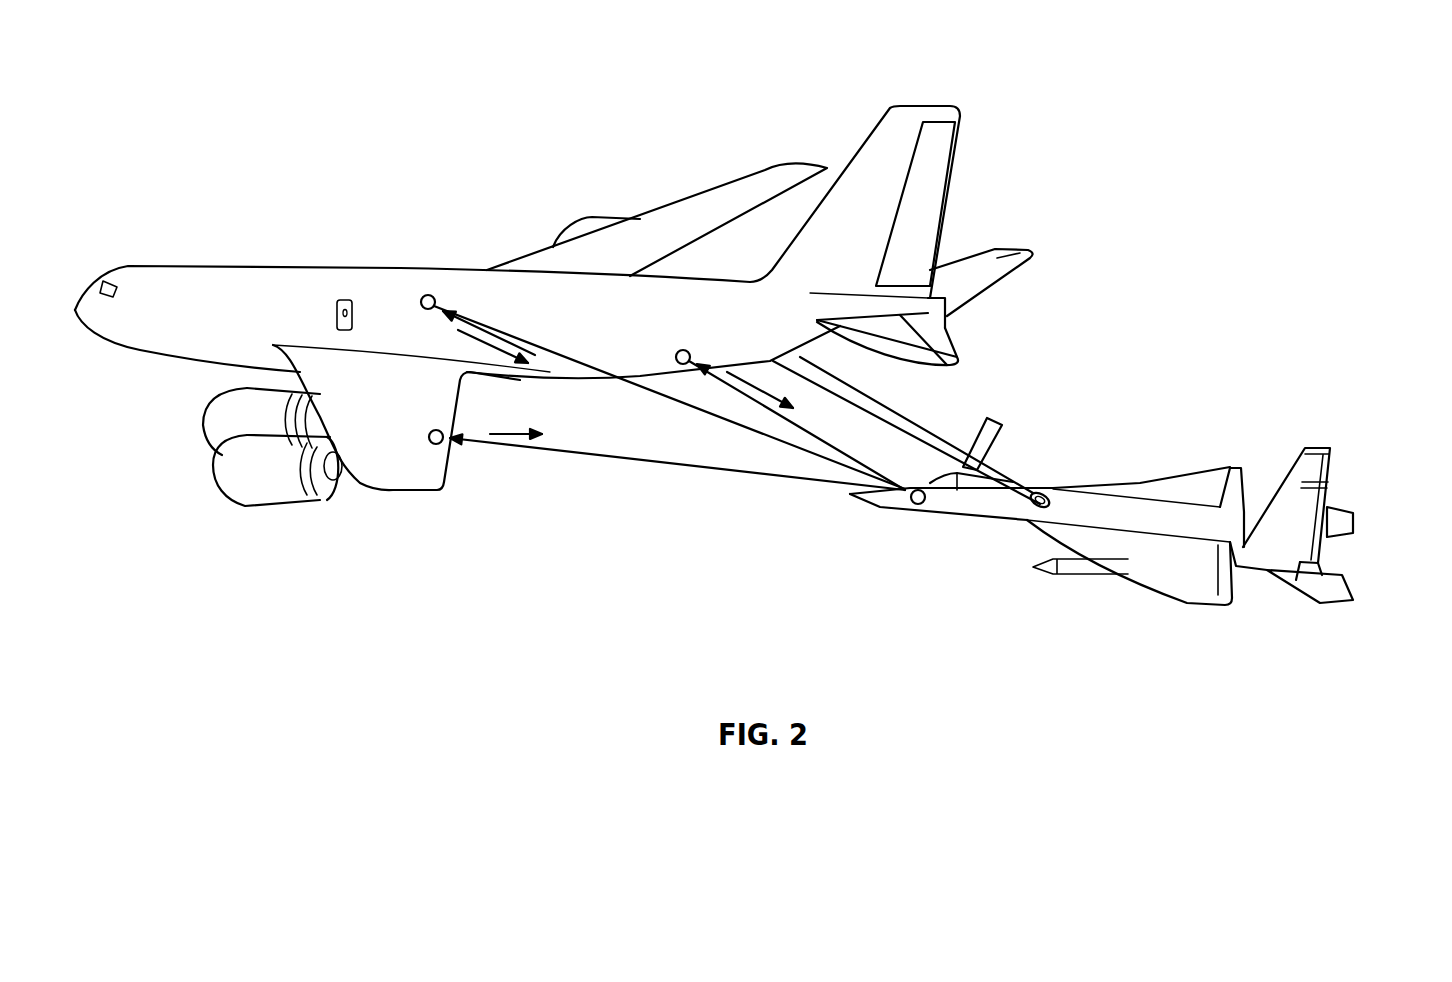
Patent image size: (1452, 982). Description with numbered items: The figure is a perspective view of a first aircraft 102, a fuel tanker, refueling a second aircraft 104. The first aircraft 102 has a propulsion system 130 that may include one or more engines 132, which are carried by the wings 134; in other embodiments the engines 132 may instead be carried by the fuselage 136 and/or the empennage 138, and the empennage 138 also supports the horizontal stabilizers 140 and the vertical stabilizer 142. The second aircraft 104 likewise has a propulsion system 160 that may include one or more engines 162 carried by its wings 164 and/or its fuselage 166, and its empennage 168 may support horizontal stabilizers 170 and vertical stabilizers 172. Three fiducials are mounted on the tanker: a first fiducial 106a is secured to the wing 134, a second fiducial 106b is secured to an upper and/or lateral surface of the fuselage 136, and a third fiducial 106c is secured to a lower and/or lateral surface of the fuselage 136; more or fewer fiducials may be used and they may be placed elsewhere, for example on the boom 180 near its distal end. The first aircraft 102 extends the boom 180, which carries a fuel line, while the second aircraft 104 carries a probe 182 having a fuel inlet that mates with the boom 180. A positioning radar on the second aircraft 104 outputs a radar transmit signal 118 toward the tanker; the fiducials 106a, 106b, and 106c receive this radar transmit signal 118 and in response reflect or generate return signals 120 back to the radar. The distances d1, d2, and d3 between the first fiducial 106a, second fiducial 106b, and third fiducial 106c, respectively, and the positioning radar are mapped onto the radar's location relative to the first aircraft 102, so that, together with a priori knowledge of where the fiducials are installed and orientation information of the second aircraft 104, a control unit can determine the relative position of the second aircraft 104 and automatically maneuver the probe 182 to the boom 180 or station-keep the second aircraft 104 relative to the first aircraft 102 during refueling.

The first aircraft 102 is at (232, 258).
The second aircraft 104 is at (1218, 505).
The first fiducial 106a is at (439, 445).
The second fiducial 106b is at (429, 295).
The third fiducial 106c is at (688, 350).
The radar transmit signal 118 is at (783, 484).
The return signals 120 is at (510, 330).
The propulsion system 130 is at (602, 193).
The engines 132 is at (605, 225).
The wings 134 is at (773, 180).
The fuselage 136 is at (312, 268).
The empennage 138 is at (927, 253).
The horizontal stabilizers 140 is at (1015, 262).
The vertical stabilizer 142 is at (905, 140).
The propulsion system 160 is at (1013, 540).
The engines 162 is at (1005, 520).
The wings 164 is at (1193, 483).
The fuselage 166 is at (1067, 495).
The empennage 168 is at (1318, 545).
The horizontal stabilizers 170 is at (1350, 520).
The vertical stabilizers 172 is at (1330, 460).
The boom 180 is at (912, 418).
The probe 182 is at (1035, 486).
The first distance d1 is at (600, 463).
The second distance d2 is at (637, 387).
The third distance d3 is at (847, 450).